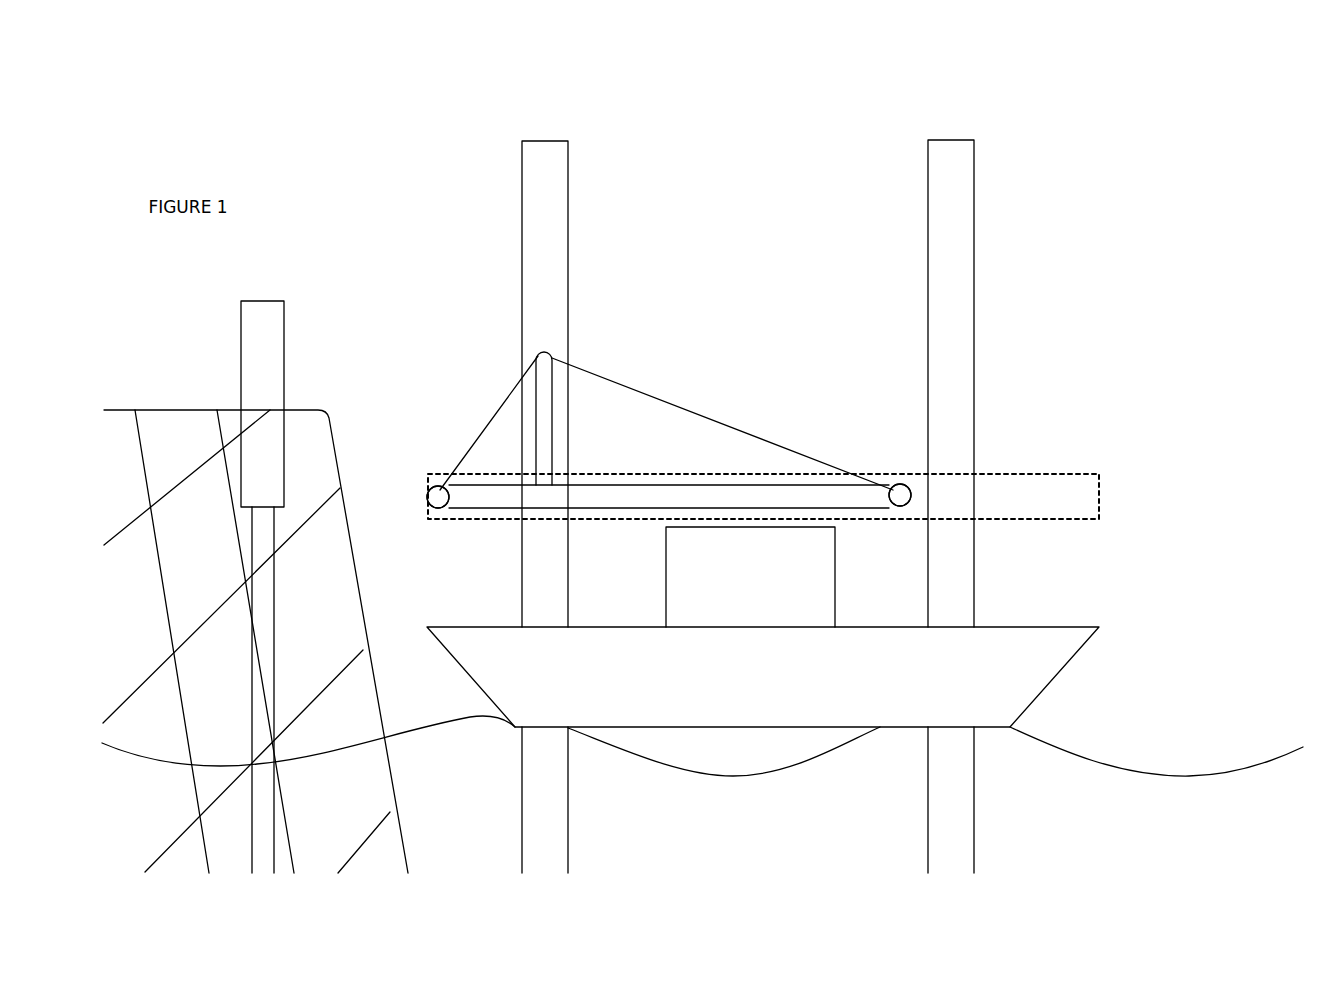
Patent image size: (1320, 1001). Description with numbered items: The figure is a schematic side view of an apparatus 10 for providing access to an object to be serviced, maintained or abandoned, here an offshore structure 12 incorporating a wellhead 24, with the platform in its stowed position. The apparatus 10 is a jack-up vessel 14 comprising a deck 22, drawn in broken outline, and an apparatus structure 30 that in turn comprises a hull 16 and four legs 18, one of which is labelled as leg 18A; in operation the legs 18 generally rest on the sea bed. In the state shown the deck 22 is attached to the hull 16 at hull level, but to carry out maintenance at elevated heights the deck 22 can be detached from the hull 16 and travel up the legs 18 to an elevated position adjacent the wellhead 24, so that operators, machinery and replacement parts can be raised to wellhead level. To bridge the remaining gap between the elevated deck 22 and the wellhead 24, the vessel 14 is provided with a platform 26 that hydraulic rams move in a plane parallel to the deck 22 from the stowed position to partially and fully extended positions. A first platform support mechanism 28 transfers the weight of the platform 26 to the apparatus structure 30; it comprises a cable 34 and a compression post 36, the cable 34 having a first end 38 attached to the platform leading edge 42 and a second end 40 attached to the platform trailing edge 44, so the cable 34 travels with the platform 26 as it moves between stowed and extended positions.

The apparatus 10 is at (1045, 146).
The offshore structure 12 is at (170, 407).
The jack-up vessel 14 is at (1005, 354).
The hull 16 is at (991, 666).
The legs 18 is at (953, 133).
The column 18A is at (535, 152).
The deck 22 is at (1099, 508).
The wellhead 24 is at (240, 337).
The platform 26 is at (493, 500).
The first platform support mechanism 28 is at (624, 364).
The apparatus structure 30 is at (1042, 370).
The cable 34 is at (702, 413).
The compression post 36 is at (552, 429).
The first end 38 is at (428, 488).
The second end 40 is at (896, 491).
The platform leading edge 42 is at (428, 507).
The platform trailing edge 44 is at (907, 506).